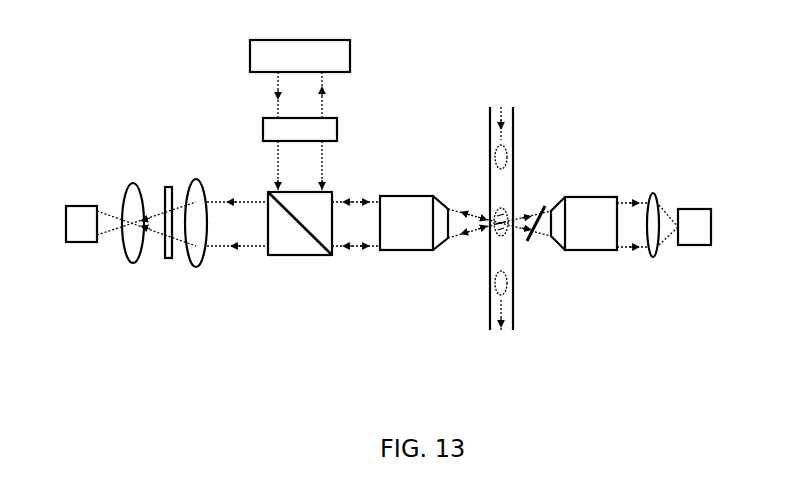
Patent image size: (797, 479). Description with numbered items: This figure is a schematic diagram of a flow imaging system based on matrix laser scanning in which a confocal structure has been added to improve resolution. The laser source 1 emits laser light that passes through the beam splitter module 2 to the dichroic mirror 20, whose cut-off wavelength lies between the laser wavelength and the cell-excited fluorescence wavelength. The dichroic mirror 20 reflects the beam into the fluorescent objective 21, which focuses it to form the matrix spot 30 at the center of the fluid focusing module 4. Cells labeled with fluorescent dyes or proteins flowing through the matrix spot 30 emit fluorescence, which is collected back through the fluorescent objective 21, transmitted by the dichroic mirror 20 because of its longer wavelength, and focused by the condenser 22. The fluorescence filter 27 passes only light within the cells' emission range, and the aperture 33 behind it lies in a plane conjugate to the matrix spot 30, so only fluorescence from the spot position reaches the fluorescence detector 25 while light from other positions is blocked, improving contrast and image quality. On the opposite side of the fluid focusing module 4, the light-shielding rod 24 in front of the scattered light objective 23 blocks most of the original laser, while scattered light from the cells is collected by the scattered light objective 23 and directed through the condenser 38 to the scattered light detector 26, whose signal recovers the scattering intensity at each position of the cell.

The laser source 1 is at (299, 42).
The beam splitter module 2 is at (340, 125).
The fluid focusing module 4 is at (516, 140).
The dichroic mirror 20 is at (305, 258).
The fluorescent objective 21 is at (420, 254).
The condenser 22 is at (196, 268).
The scattered light objective 23 is at (598, 252).
The light-shielding rod 24 is at (546, 200).
The fluorescence detector 25 is at (78, 256).
The scattered light detector 26 is at (695, 253).
The fluorescence filter 27 is at (170, 186).
The matrix spot 30 is at (490, 212).
The aperture 33 is at (120, 197).
The condenser 38 is at (656, 190).